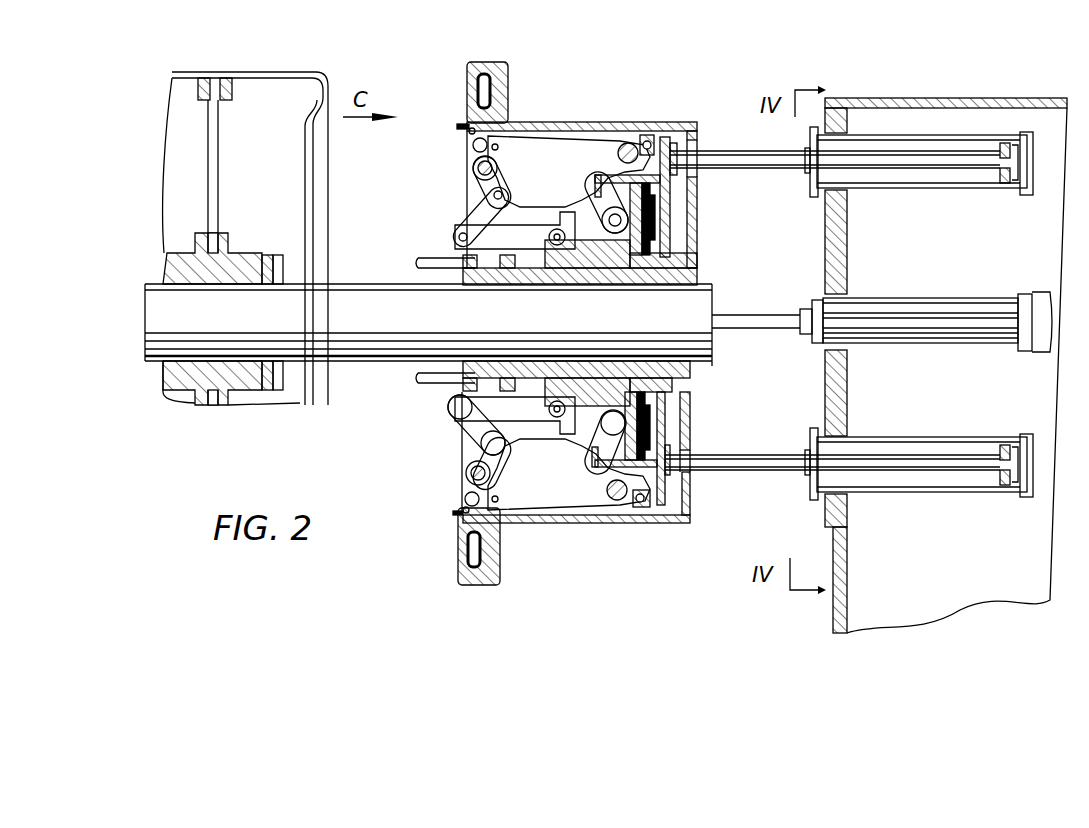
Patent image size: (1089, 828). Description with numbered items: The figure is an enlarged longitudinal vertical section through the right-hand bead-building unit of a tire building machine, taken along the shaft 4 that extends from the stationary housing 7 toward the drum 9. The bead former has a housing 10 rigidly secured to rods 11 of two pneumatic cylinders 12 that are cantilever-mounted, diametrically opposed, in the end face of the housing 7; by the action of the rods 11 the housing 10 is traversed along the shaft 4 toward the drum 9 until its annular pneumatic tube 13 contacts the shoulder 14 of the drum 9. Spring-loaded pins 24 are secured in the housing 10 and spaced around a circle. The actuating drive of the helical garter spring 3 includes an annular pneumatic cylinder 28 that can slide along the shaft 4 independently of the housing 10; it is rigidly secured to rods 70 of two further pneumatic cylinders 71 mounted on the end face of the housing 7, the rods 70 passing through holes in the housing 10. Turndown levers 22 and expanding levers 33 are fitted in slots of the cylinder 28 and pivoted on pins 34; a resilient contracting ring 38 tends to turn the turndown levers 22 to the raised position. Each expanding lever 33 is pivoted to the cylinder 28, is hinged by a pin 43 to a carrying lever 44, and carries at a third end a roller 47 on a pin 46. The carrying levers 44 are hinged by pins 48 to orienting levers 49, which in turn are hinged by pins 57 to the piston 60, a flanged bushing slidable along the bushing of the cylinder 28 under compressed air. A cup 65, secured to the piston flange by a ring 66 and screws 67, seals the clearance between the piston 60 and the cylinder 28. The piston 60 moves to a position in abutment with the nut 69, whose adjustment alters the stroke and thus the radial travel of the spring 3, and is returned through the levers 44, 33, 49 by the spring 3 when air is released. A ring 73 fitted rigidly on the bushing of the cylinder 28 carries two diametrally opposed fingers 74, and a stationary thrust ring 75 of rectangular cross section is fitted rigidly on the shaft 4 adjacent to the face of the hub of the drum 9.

The helical garter spring 3 is at (476, 164).
The shaft 4 is at (157, 298).
The housing 7 is at (917, 106).
The drum 9 is at (185, 90).
The housing 10 is at (508, 74).
The rod 11 is at (762, 316).
The pneumatic cylinder 12 is at (919, 300).
The annular pneumatic tube 13 is at (468, 84).
The shoulder 14 is at (328, 92).
The turndown lever 22 is at (547, 147).
The pin 24 is at (465, 122).
The annular pneumatic cylinder 28 is at (665, 190).
The expanding lever 33 is at (536, 452).
The pin 34 is at (630, 150).
The resilient contracting ring 38 is at (646, 140).
The pin 43 is at (475, 175).
The carrying lever 44 is at (480, 205).
The pin 46 is at (612, 435).
The roller 47 is at (617, 235).
The pin 48 is at (455, 236).
The orienting lever 49 is at (473, 224).
The pin 57 is at (557, 248).
The piston 60 is at (615, 500).
The cup 65 is at (641, 507).
The ring 66 is at (666, 402).
The screw 67 is at (650, 425).
The nut 69 is at (470, 436).
The rod 70 is at (718, 150).
The pneumatic cylinder 71 is at (885, 190).
The ring 73 is at (447, 398).
The finger 74 is at (420, 381).
The thrust ring 75 is at (263, 254).